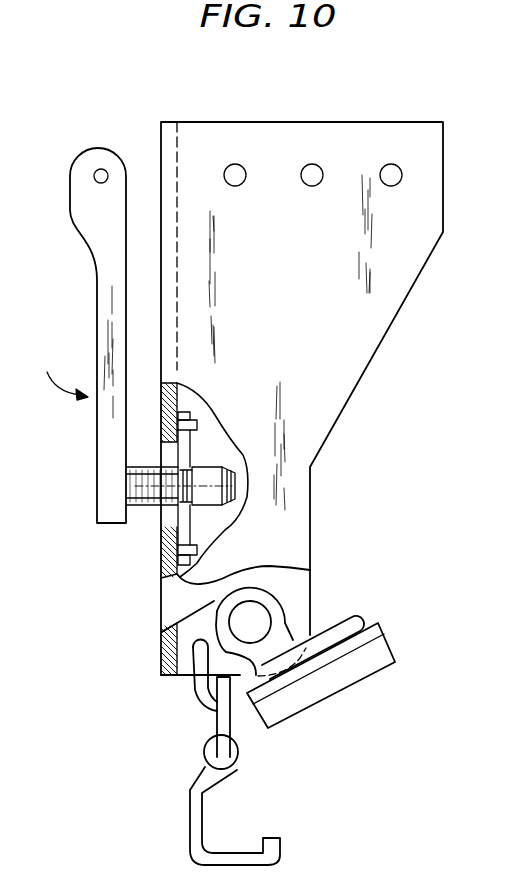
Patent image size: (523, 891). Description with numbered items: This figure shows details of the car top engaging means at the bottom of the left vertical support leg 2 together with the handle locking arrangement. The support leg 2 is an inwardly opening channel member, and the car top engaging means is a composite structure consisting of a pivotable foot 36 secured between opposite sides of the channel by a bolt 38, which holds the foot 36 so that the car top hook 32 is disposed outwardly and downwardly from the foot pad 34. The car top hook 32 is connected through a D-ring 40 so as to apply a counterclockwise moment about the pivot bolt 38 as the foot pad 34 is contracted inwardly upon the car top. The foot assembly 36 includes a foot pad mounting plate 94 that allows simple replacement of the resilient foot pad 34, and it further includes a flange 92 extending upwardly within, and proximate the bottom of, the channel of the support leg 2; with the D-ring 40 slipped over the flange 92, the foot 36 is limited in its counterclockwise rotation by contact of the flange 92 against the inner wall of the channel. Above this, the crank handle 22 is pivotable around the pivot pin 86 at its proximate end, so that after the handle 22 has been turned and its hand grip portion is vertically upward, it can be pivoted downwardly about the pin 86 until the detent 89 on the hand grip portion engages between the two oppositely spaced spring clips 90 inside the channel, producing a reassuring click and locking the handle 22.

The vertical support leg 2 is at (284, 295).
The crank handle 22 is at (97, 307).
The car top hook 32 is at (192, 833).
The foot pad 34 is at (377, 673).
The pivotable foot 36 is at (330, 622).
The pivot bolt 38 is at (246, 596).
The D-ring 40 is at (217, 722).
The pivot pin 86 is at (97, 172).
The detent 89 is at (170, 492).
The spring clips 90 is at (192, 452).
The flange 92 is at (188, 676).
The foot pad mounting plate 94 is at (370, 628).